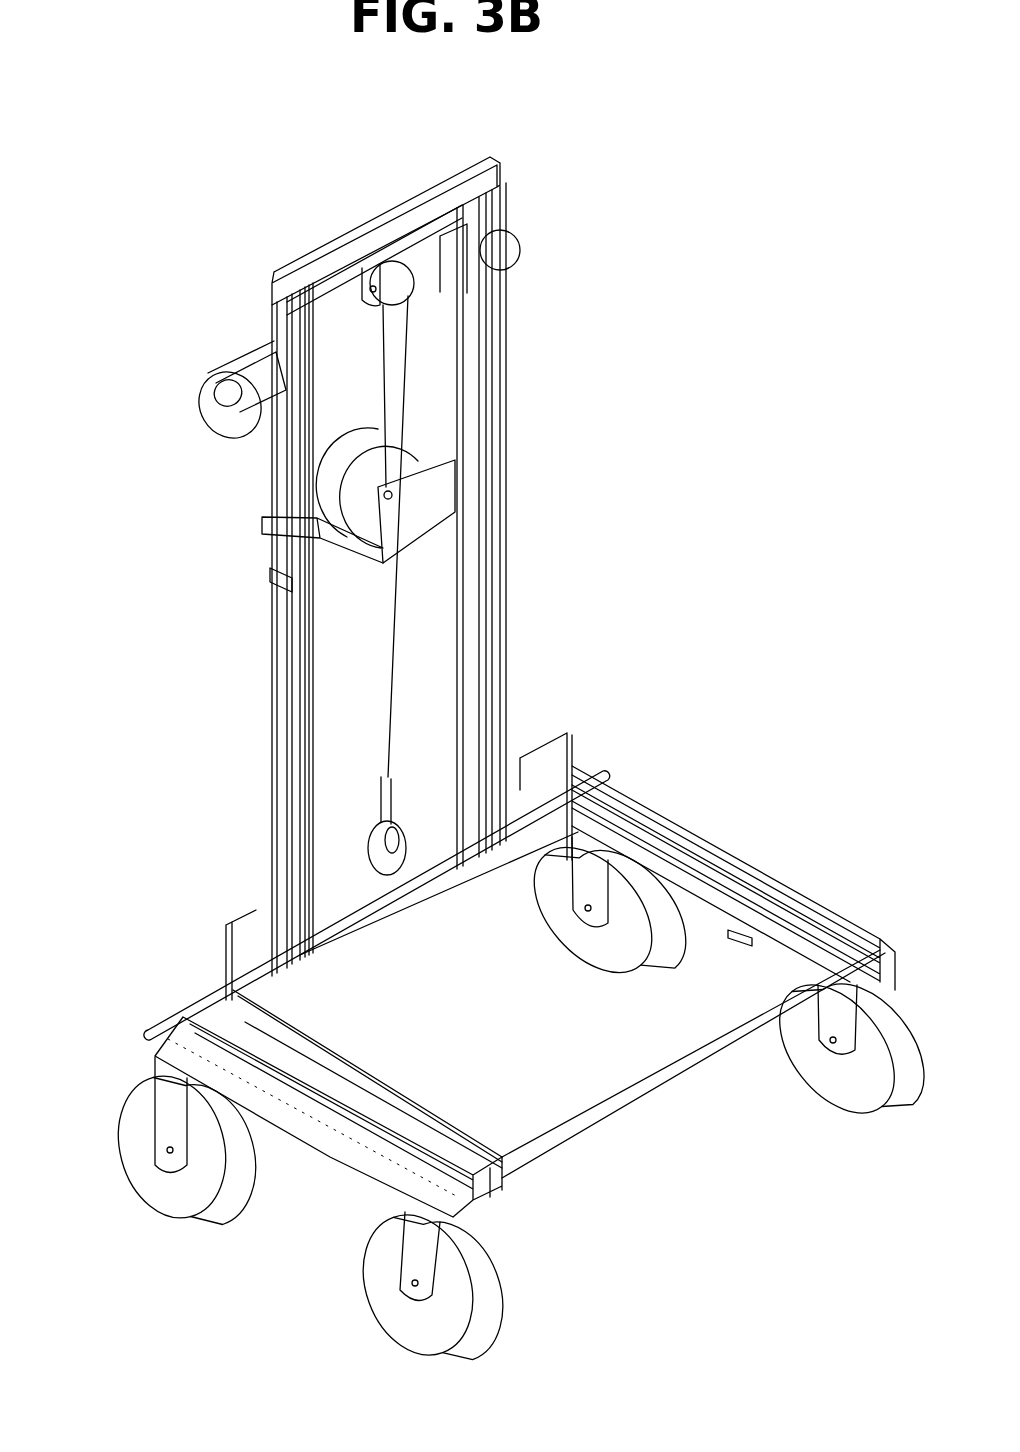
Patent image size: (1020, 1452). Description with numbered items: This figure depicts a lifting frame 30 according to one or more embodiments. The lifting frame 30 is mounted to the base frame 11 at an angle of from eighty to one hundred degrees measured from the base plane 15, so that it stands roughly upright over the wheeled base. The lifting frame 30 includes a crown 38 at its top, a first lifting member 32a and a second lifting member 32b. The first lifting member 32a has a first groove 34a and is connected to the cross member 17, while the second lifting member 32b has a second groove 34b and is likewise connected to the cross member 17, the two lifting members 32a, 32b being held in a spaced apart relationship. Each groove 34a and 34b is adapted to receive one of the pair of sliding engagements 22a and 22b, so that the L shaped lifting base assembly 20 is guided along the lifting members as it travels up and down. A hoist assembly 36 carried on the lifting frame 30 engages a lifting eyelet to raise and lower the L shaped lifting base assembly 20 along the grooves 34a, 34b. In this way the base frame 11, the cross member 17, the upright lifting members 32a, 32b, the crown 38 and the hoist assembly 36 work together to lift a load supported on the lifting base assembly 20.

The base frame 11 is at (313, 1157).
The base plane 15 is at (550, 1138).
The cross member 17 is at (173, 1017).
The L shaped lifting base assembly 20 is at (680, 1088).
The sliding engagement 22a is at (300, 917).
The sliding engagement 22b is at (487, 805).
The lifting frame 30 is at (383, 217).
The first lifting member 32a is at (507, 415).
The second lifting member 32b is at (270, 565).
The first groove 34a is at (490, 683).
The second groove 34b is at (300, 770).
The hoist assembly 36 is at (422, 491).
The crown 38 is at (467, 182).